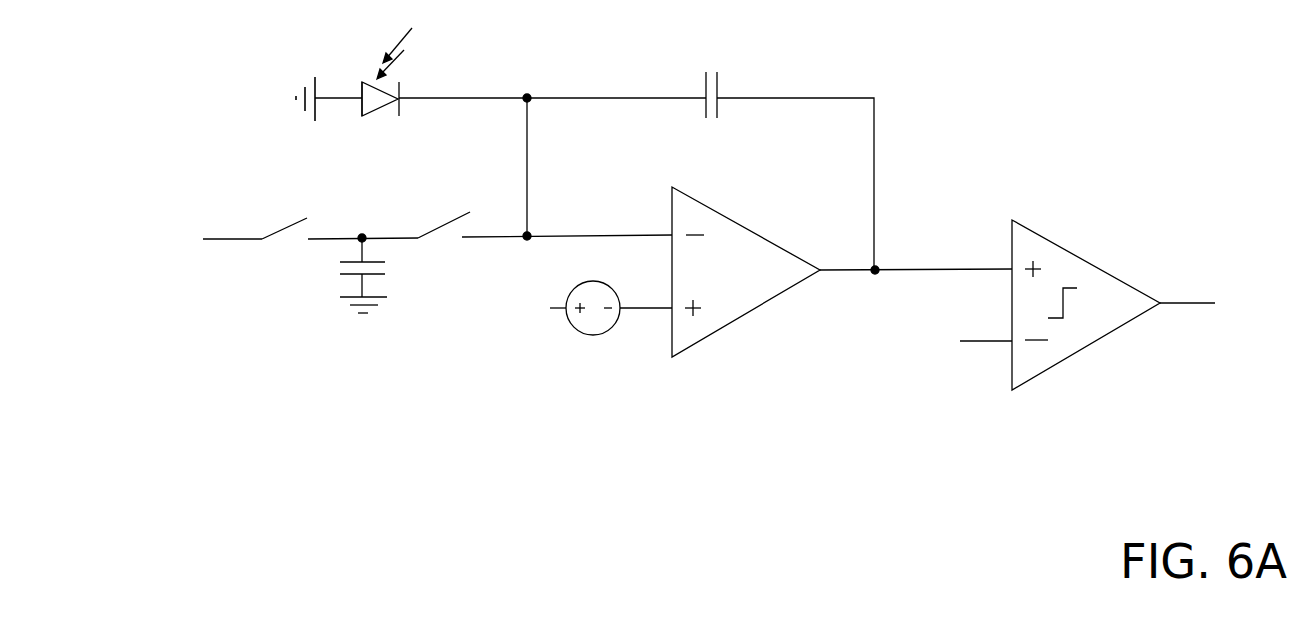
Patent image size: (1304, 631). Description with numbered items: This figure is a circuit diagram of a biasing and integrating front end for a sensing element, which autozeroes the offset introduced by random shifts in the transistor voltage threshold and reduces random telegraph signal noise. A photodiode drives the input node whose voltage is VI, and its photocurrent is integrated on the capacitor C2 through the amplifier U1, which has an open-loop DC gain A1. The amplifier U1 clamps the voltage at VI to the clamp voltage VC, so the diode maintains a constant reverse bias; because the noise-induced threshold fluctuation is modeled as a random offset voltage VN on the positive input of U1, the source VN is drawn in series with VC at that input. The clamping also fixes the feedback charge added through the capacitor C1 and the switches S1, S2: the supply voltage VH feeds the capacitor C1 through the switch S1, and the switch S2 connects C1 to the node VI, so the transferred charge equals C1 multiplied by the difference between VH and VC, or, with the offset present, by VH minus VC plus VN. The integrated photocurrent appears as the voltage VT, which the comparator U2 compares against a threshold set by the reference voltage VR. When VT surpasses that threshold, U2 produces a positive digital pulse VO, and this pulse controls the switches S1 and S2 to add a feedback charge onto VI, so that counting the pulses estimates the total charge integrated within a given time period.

The feedback charge supply voltage VH is at (203, 240).
The first switch S1 is at (340, 209).
The second switch S2 is at (545, 209).
The feedback capacitor C1 is at (385, 273).
The diode input node voltage VI is at (418, 132).
The integrating capacitor C2 is at (710, 75).
The integrated photocurrent voltage VT is at (916, 161).
The amplifier U1 is at (746, 262).
The open-loop DC gain A1 is at (726, 267).
The clamp voltage VC is at (529, 314).
The random offset voltage VN is at (619, 331).
The comparator U2 is at (1086, 288).
The reference voltage VR is at (956, 342).
The output digital pulse VO is at (1212, 303).